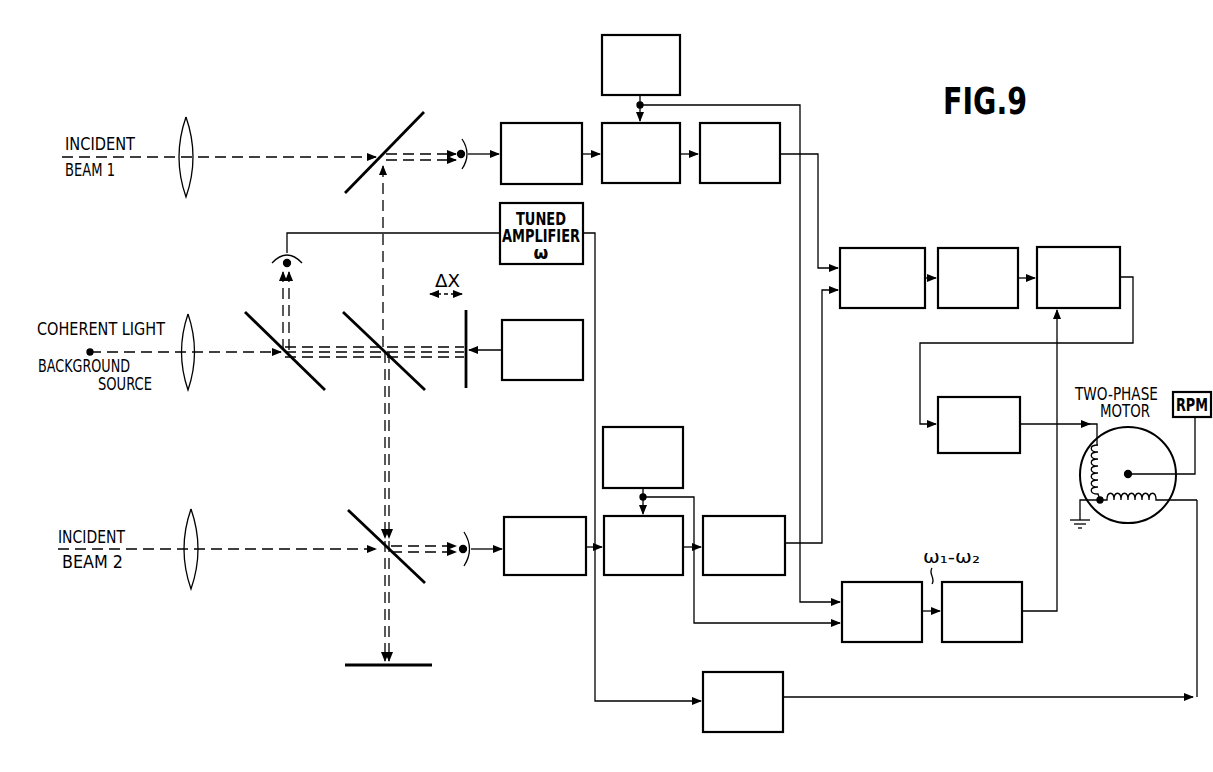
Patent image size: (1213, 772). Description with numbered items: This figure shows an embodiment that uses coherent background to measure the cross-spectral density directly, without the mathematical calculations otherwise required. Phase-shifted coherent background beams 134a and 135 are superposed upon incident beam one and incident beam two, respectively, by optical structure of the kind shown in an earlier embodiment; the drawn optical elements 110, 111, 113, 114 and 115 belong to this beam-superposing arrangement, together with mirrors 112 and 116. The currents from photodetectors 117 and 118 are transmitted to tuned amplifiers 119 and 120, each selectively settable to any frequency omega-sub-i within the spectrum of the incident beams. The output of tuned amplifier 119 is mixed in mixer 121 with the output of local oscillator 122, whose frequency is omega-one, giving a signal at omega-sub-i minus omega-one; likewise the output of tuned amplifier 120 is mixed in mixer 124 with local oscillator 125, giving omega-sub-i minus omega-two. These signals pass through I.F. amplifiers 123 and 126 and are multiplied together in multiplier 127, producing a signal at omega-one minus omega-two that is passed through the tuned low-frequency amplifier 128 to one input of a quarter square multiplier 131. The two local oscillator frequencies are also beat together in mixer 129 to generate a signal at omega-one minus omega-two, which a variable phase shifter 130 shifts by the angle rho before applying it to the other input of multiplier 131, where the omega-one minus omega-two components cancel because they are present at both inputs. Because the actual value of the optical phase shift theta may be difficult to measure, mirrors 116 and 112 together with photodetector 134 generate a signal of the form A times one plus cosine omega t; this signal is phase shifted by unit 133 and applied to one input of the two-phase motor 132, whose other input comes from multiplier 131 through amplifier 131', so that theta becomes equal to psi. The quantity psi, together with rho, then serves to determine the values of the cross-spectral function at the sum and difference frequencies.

The beam splitter mirror 110 is at (410, 124).
The beam splitter mirror 111 is at (408, 586).
The mirror 112 is at (312, 384).
The beam splitter mirror 113 is at (418, 387).
The movable mirror 114 is at (466, 390).
The mirror moving means 115 is at (525, 382).
The mirror 116 is at (423, 668).
The photodetector 117 is at (464, 140).
The photodetector 118 is at (470, 566).
The tuned amplifier 119 is at (562, 124).
The tuned amplifier 120 is at (524, 576).
The mixer 121 is at (632, 184).
The local oscillator 122 is at (681, 60).
The I.F. amplifier 123 is at (726, 184).
The mixer 124 is at (627, 576).
The local oscillator 125 is at (683, 458).
The I.F. amplifier 126 is at (772, 516).
The multiplier 127 is at (888, 248).
The tuned low frequency amplifier 128 is at (972, 248).
The mixer 129 is at (892, 582).
The variable phase shifter 130 is at (1000, 582).
The quarter square multiplier 131 is at (1078, 262).
The amplifier 131' is at (979, 409).
The two-phase motor 132 is at (1165, 456).
The phase shifter 133 is at (783, 730).
The photodetector 134 is at (282, 256).
The coherent background beam 134a is at (385, 205).
The coherent background beam 135 is at (384, 458).